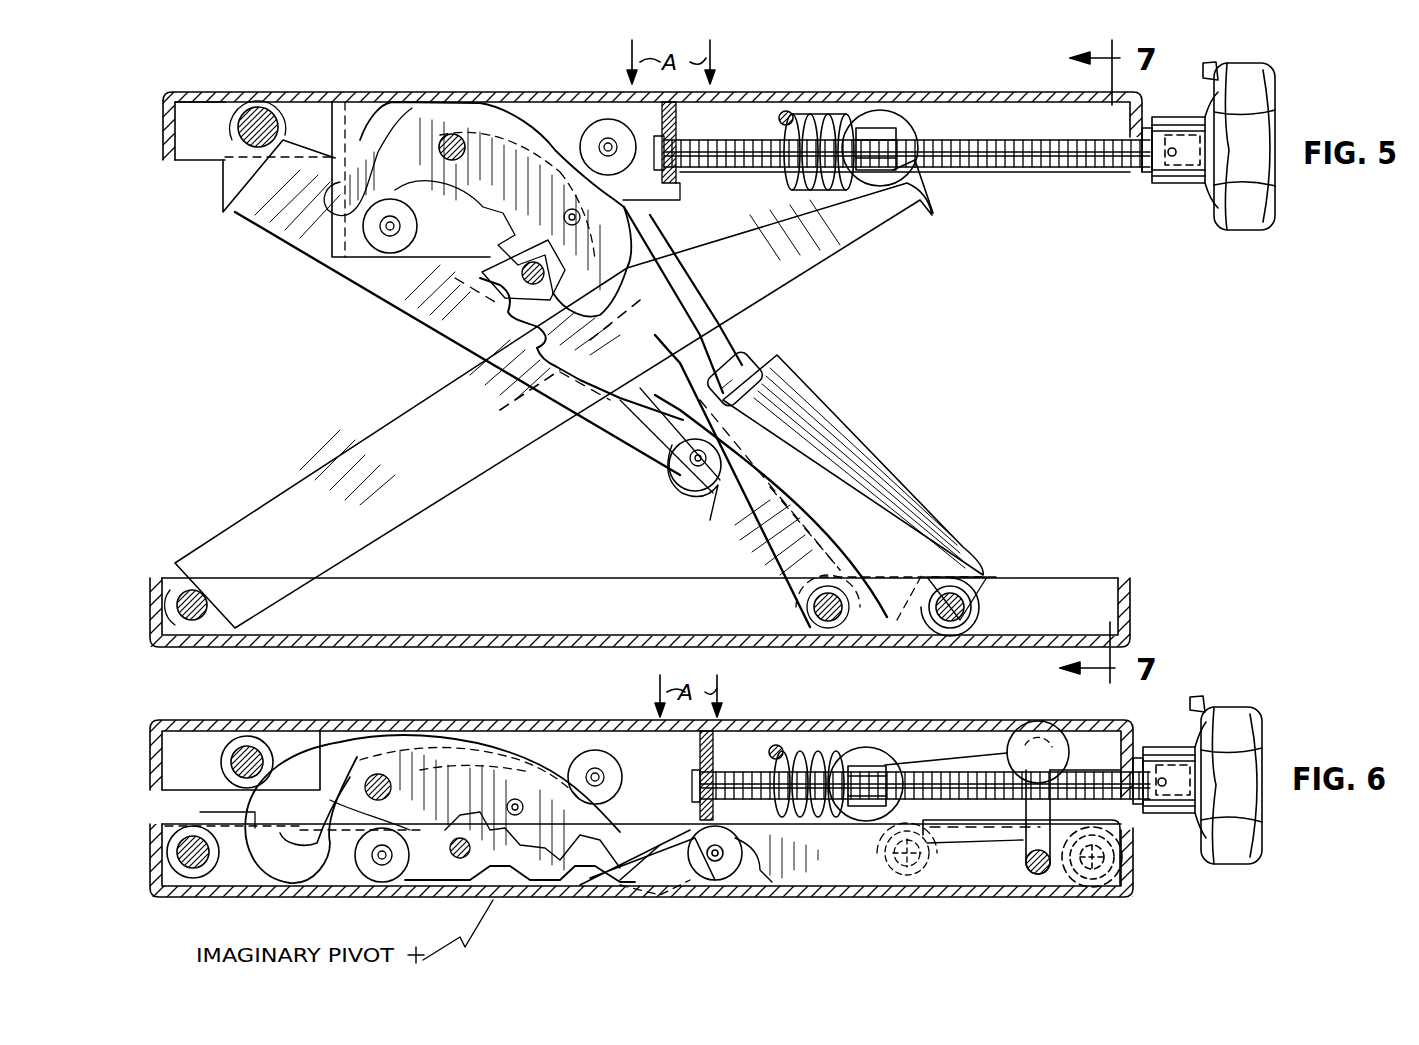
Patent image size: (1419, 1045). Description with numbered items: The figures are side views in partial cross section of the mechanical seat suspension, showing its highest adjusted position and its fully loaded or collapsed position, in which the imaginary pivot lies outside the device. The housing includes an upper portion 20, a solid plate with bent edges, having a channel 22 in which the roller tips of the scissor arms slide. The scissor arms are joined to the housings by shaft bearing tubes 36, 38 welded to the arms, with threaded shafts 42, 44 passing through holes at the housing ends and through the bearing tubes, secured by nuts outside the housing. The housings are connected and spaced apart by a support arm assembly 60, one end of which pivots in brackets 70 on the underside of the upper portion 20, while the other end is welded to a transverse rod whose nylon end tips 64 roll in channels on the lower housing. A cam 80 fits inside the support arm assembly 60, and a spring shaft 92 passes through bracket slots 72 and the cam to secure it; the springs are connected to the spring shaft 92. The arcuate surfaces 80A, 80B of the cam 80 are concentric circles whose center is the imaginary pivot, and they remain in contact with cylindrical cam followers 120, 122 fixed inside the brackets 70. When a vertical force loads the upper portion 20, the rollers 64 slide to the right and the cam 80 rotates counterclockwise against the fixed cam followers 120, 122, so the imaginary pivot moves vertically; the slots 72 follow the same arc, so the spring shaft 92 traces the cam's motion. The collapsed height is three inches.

In FIG. 5, the upper portion 20 is at (905, 112).
In FIG. 6, the channel 22 is at (585, 750).
In FIG. 5, the shaft bearing tube 36 is at (293, 147).
In FIG. 5, the shaft bearing tube 38 is at (200, 632).
In FIG. 5, the threaded shaft 42 is at (258, 112).
In FIG. 5, the threaded shaft 44 is at (168, 603).
In FIG. 5, the support arm assembly 60 is at (733, 547).
In FIG. 5, the end tip 64 is at (840, 622).
In FIG. 6, the end tip 64 is at (937, 878).
In FIG. 5, the bracket 70 is at (325, 231).
In FIG. 5, the bracket slot 72 is at (367, 104).
In FIG. 6, the cam 80 is at (585, 870).
In FIG. 5, the arcuate surface 80A is at (383, 293).
In FIG. 5, the arcuate surface 80B is at (550, 117).
In FIG. 5, the spring shaft 92 is at (467, 137).
In FIG. 5, the cam follower 120 is at (365, 254).
In FIG. 6, the cam follower 120 is at (397, 897).
In FIG. 5, the cam follower 122 is at (676, 187).